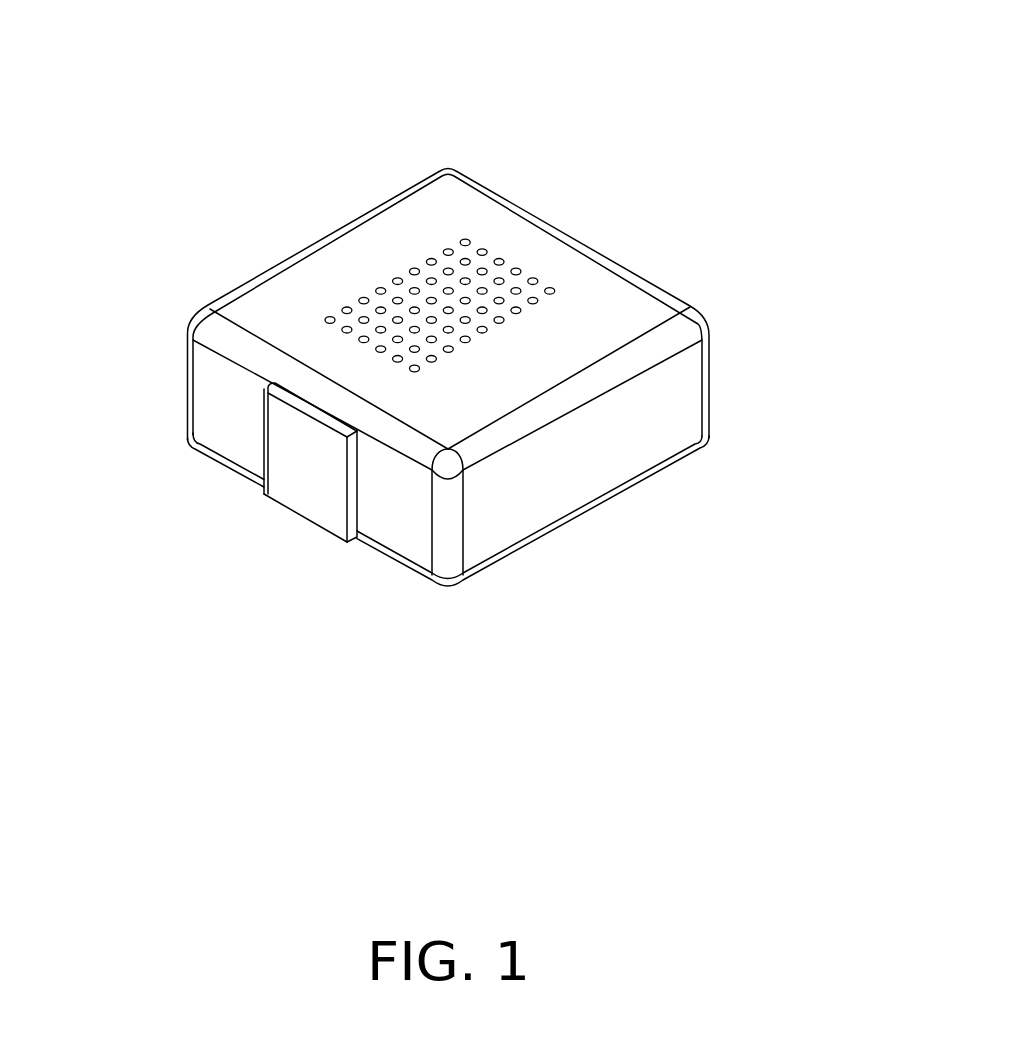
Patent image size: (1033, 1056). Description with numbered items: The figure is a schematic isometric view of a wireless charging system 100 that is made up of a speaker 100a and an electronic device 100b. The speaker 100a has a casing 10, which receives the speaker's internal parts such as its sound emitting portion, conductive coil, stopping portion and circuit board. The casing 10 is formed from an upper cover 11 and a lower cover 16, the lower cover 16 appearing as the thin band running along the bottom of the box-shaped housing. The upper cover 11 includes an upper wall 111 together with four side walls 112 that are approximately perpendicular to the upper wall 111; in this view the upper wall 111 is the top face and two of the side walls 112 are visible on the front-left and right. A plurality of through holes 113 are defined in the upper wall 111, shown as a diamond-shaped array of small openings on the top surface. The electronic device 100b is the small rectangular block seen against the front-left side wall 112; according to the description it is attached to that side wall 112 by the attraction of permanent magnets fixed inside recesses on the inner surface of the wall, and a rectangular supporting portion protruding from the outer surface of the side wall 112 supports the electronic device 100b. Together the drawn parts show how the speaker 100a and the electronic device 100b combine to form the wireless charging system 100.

The wireless charging system 100 is at (645, 88).
The casing 10 is at (88, 407).
The upper cover 11 is at (215, 405).
The lower cover 16 is at (203, 457).
The upper wall 111 is at (385, 235).
The side walls 112 is at (388, 525).
The through holes 113 is at (507, 270).
The speaker 100a is at (680, 385).
The electronic device 100b is at (313, 475).